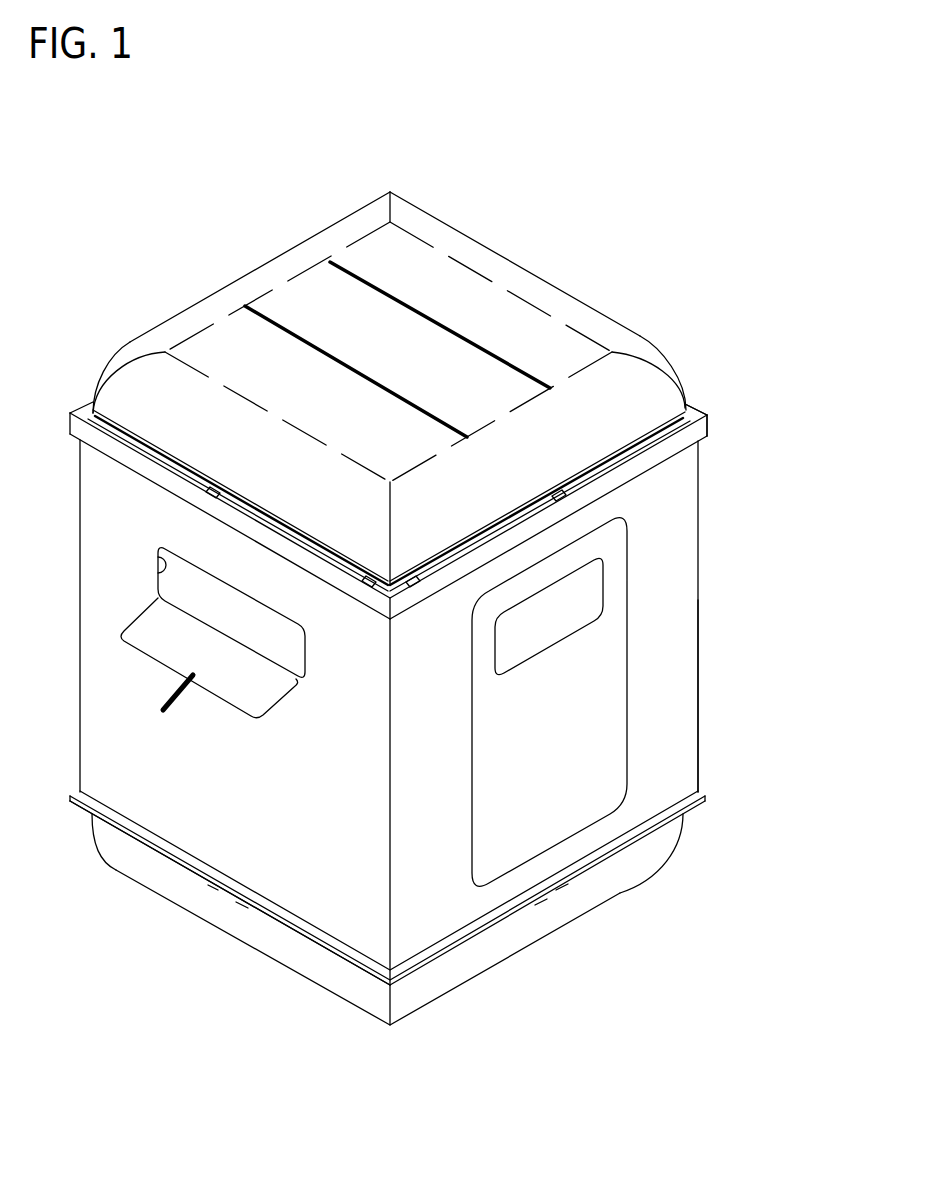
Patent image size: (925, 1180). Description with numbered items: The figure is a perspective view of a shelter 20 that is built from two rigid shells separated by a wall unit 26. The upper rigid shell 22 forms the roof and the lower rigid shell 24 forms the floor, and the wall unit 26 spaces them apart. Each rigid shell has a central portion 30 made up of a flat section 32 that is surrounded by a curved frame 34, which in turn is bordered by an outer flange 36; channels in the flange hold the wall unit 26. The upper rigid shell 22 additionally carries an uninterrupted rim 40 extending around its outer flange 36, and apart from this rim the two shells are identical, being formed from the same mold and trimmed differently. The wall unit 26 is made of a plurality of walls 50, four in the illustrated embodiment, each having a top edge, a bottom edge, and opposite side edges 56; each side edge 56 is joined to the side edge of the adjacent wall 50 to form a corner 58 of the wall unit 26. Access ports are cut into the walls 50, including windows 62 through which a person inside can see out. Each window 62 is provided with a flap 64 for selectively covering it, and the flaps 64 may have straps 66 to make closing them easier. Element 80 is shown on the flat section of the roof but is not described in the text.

The shelter 20 is at (561, 202).
The upper rigid shell 22 is at (651, 329).
The lower rigid shell 24 is at (624, 901).
The wall unit 26 is at (713, 571).
The central portion 30 is at (378, 357).
The flat section 32 is at (272, 287).
The curved frame 34 is at (96, 410).
The outer flange 36 is at (700, 409).
The rim 40 is at (707, 423).
The wall 50 is at (208, 784).
The side edge 56 is at (330, 950).
The corner 58 is at (700, 725).
The window 62 is at (158, 549).
The flap 64 is at (537, 617).
The strap 66 is at (175, 710).
The rib 80 is at (473, 340).